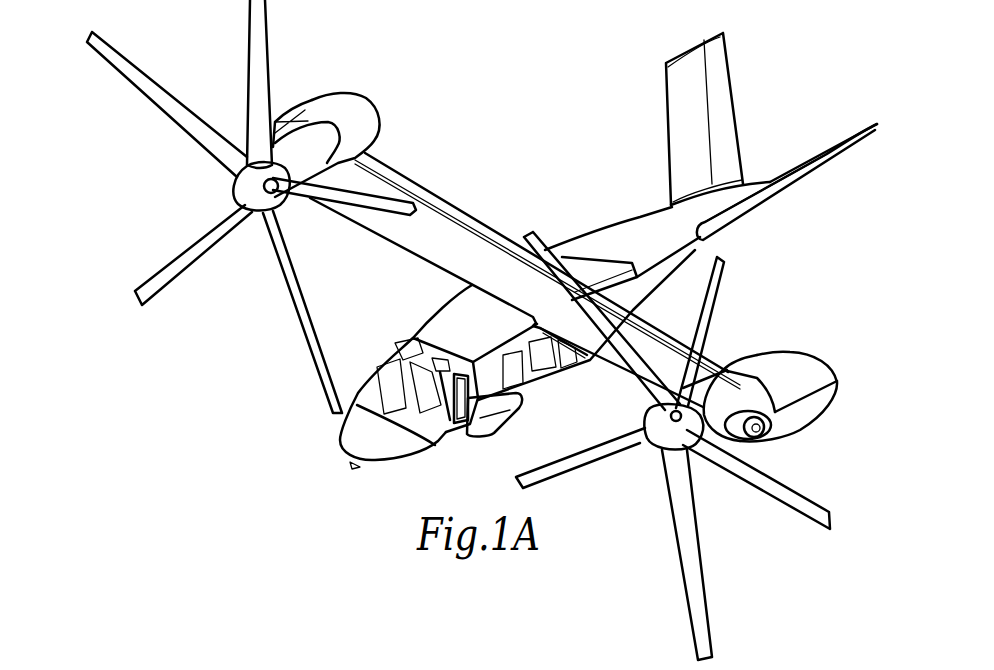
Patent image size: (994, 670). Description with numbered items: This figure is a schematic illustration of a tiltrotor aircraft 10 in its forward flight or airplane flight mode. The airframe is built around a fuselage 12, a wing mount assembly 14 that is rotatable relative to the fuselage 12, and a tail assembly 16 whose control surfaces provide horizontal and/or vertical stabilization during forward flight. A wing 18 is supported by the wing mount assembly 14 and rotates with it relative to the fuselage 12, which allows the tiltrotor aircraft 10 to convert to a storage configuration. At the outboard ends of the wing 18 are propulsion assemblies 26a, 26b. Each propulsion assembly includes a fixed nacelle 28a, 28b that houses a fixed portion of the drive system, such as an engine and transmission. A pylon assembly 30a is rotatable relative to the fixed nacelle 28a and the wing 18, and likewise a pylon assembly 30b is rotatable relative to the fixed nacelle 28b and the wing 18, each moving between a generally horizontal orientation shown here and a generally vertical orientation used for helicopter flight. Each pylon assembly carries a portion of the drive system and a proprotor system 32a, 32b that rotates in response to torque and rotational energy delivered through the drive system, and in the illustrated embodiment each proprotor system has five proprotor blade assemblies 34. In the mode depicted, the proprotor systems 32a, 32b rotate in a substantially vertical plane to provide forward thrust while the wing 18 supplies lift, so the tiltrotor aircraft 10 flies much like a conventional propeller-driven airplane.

The tiltrotor aircraft 10 is at (525, 130).
The fuselage 12 is at (638, 229).
The wing mount assembly 14 is at (567, 252).
The tail assembly 16 is at (728, 113).
The wing 18 is at (457, 236).
The propulsion assembly 26a is at (813, 367).
The propulsion assembly 26b is at (329, 104).
The fixed nacelle 28a is at (787, 383).
The fixed nacelle 28b is at (357, 107).
The pylon assembly 30a is at (727, 377).
The pylon assembly 30b is at (298, 136).
The proprotor system 32a is at (651, 452).
The proprotor system 32b is at (248, 215).
The proprotor blade assemblies 34 is at (172, 263).